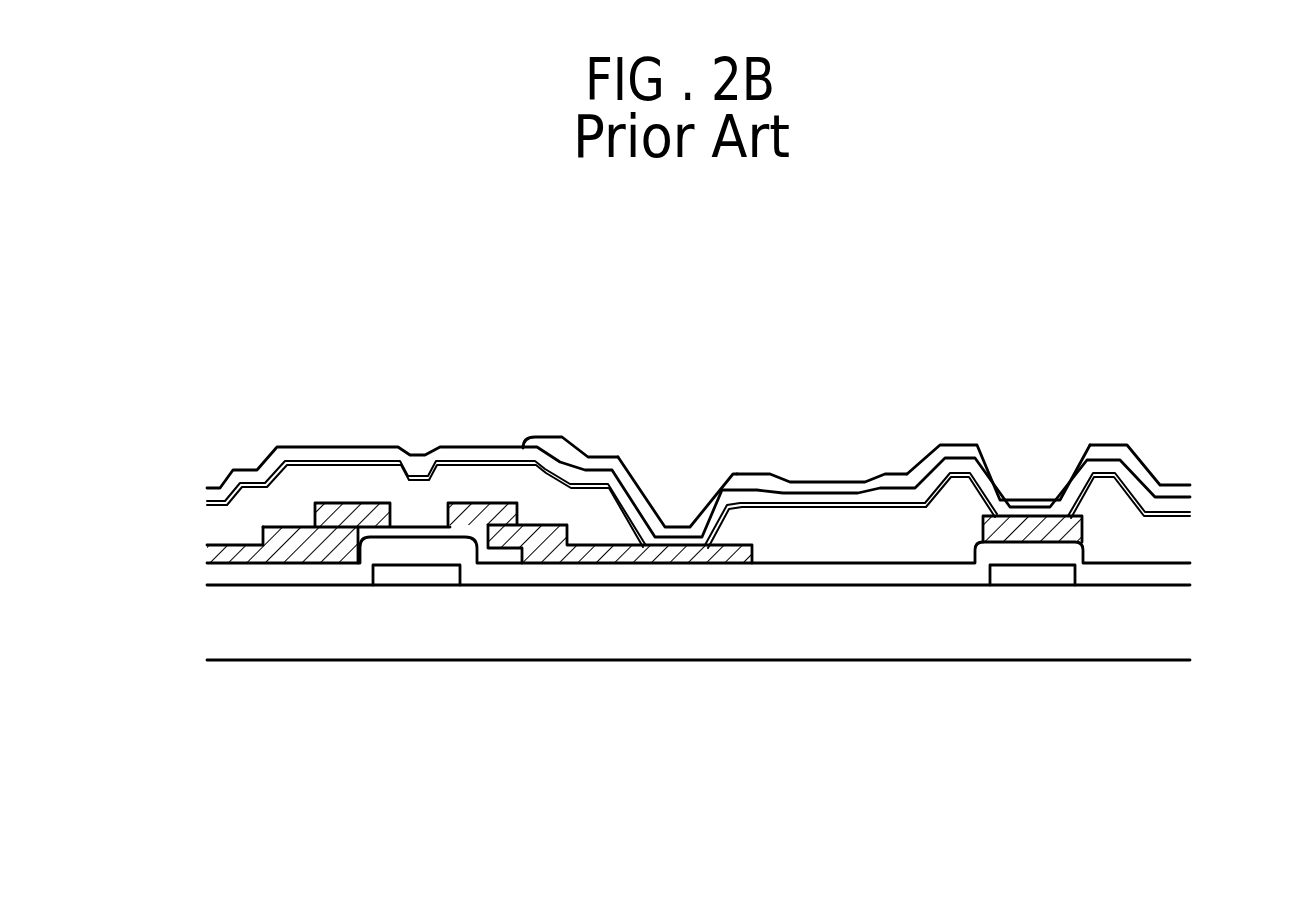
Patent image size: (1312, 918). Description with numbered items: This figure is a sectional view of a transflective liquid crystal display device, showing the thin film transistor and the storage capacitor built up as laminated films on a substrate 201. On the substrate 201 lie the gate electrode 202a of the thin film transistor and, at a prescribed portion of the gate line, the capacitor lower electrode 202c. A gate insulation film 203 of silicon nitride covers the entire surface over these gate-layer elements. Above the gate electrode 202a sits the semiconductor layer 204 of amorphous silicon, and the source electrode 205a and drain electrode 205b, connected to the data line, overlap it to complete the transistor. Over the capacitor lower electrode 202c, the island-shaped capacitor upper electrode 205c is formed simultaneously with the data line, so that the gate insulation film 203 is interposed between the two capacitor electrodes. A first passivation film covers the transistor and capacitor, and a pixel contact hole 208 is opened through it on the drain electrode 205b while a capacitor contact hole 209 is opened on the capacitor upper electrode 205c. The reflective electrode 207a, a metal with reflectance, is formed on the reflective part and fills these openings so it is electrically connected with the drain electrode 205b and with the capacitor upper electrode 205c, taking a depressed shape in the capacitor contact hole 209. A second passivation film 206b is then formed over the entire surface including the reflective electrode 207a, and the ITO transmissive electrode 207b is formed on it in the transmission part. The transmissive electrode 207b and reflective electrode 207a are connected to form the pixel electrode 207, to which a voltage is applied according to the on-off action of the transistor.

The substrate 201 is at (1168, 627).
The gate electrode 202a is at (422, 572).
The capacitor lower electrode 202c is at (1028, 583).
The gate insulation film 203 is at (858, 575).
The semiconductor layer 204 is at (353, 505).
The source electrode 205a is at (207, 549).
The drain electrode 205b is at (477, 505).
The capacitor upper electrode 205c is at (1085, 527).
The second passivation film 206b is at (868, 497).
The pixel electrode 207 is at (698, 376).
The reflective electrode 207a is at (738, 472).
The transmissive electrode 207b is at (856, 408).
The pixel contact hole 208 is at (665, 475).
The capacitor contact hole 209 is at (1027, 470).